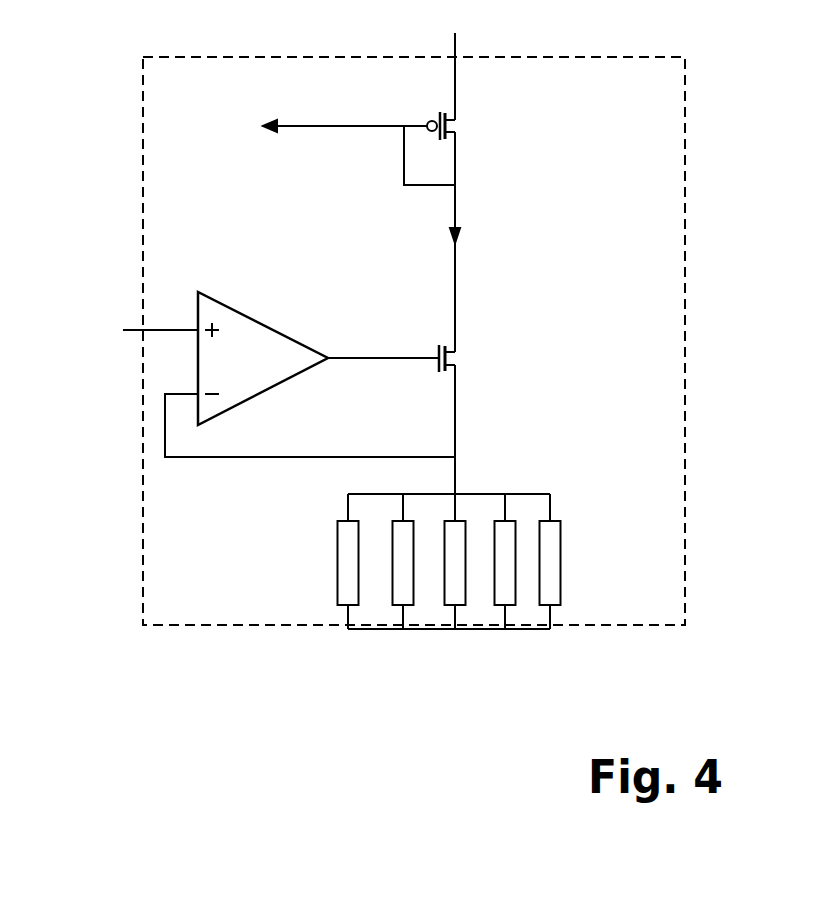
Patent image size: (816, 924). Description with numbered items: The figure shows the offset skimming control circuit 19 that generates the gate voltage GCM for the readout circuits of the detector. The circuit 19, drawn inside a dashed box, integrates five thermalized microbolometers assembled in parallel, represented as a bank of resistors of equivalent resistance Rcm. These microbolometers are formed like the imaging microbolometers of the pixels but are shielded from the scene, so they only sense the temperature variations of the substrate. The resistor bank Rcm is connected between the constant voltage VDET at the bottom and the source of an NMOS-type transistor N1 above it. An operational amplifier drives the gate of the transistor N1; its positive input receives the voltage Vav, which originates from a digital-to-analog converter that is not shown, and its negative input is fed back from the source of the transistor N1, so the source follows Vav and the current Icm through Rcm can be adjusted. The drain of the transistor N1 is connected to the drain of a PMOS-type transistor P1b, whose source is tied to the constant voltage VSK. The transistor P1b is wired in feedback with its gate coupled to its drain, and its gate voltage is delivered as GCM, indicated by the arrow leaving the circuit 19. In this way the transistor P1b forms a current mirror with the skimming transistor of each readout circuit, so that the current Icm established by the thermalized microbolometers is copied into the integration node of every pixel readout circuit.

The circuit 19 is at (217, 627).
The PMOS-type transistor P1b is at (460, 147).
The NMOS-type transistor N1 is at (471, 358).
The equivalent resistance Rcm is at (477, 561).
The constant voltage VSK is at (455, 60).
The gate voltage GCM is at (312, 128).
The current Icm is at (435, 244).
The voltage Vav is at (135, 334).
The constant voltage VDET is at (537, 651).